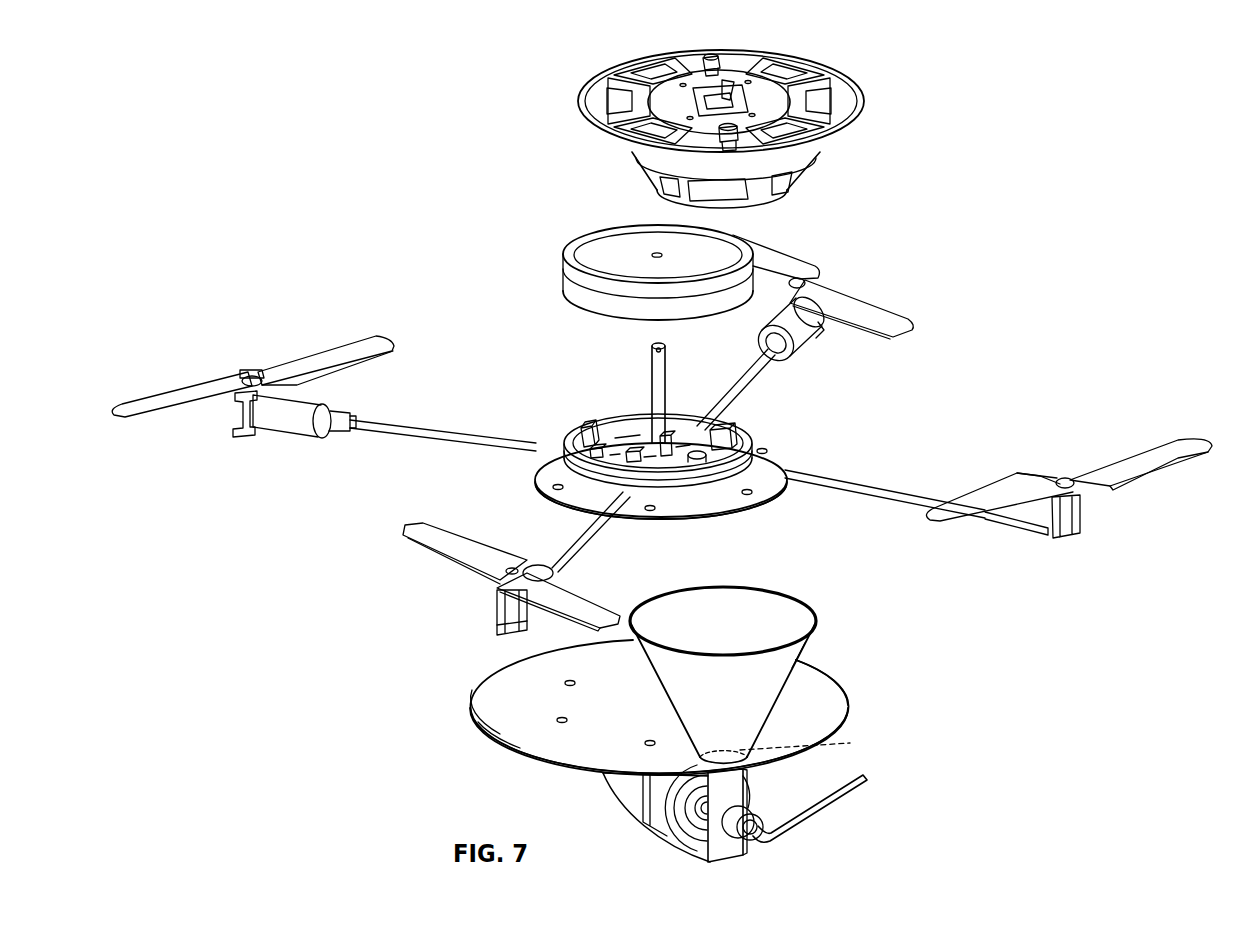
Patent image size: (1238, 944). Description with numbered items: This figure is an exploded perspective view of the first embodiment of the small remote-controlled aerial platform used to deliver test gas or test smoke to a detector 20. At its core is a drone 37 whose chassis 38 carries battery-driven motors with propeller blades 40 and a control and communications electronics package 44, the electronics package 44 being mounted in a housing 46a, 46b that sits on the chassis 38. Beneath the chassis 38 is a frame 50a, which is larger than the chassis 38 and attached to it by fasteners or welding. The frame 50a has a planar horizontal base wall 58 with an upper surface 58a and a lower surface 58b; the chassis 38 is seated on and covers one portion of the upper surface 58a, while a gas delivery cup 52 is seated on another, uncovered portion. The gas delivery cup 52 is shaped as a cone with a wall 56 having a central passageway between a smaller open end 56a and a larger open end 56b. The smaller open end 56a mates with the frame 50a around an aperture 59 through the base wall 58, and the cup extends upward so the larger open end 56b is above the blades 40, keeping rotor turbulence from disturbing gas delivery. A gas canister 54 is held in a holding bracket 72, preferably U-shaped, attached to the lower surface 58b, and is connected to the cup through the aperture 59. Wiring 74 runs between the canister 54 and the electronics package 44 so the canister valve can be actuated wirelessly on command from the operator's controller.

The detector 20 is at (600, 70).
The drone 37 is at (572, 415).
The chassis 38 is at (778, 470).
The propeller blades 40 is at (878, 318).
The control and communications electronics package 44 is at (697, 427).
The housing 46a is at (755, 447).
The housing 46b is at (572, 268).
The frame 50a is at (494, 698).
The gas delivery cup 52 is at (790, 678).
The gas canister 54 is at (657, 808).
The wall 56 is at (768, 684).
The smaller open end 56a is at (740, 760).
The larger open end 56b is at (768, 612).
The base wall 58 is at (640, 714).
The upper surface 58a is at (500, 730).
The lower surface 58b is at (500, 748).
The aperture 59 is at (810, 742).
The holding bracket 72 is at (623, 805).
The wiring 74 is at (835, 802).